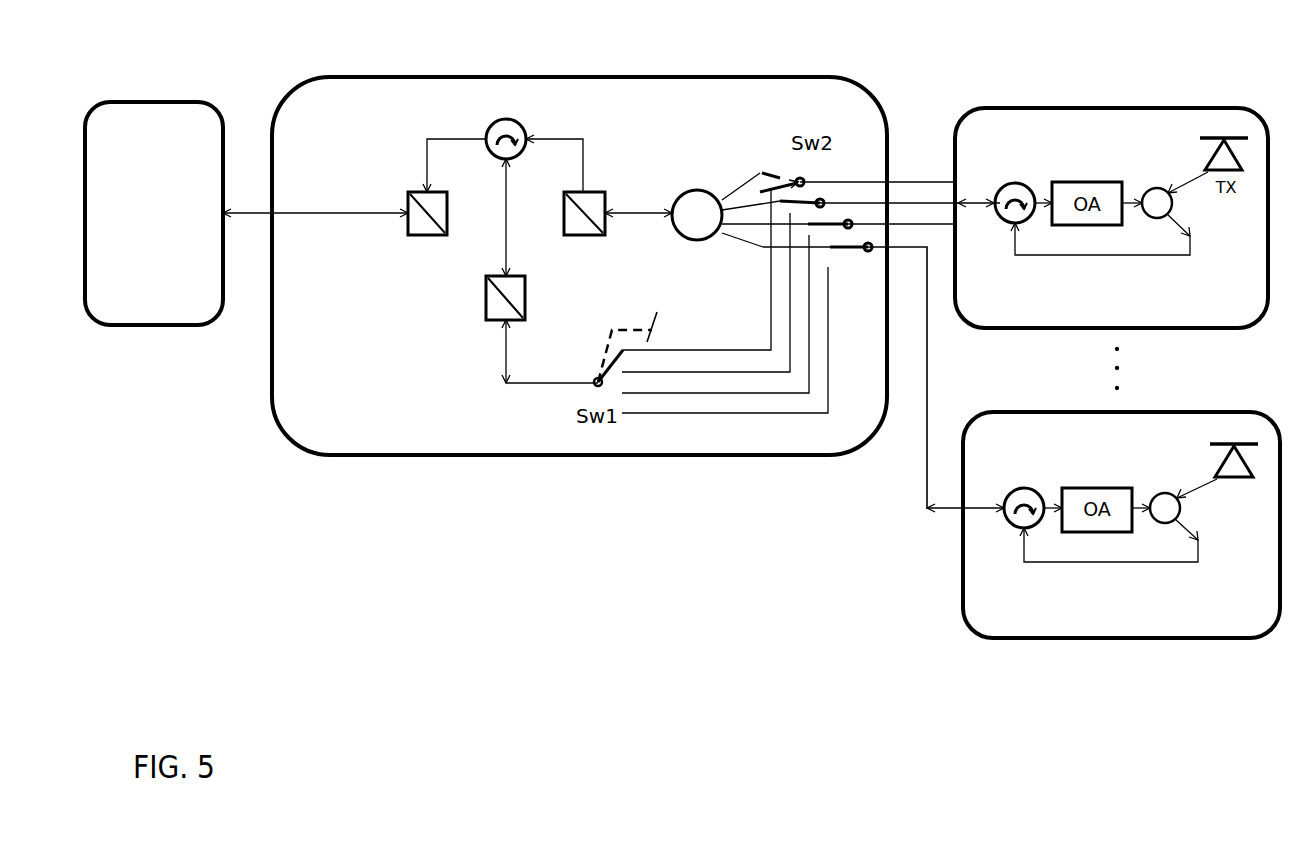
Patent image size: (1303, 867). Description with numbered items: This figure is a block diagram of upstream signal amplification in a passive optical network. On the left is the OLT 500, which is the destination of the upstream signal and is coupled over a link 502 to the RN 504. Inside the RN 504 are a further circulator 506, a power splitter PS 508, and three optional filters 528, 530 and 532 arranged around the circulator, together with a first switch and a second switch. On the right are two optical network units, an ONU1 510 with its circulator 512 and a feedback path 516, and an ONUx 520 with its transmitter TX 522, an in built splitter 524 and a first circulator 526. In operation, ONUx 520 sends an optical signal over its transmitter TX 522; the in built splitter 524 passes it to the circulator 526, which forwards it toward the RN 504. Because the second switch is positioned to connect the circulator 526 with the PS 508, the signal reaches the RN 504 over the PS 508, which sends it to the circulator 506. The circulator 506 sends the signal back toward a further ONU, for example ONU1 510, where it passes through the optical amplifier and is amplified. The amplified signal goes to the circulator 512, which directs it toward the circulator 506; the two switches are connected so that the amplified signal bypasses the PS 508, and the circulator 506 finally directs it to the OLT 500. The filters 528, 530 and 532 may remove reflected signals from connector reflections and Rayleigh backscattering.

The OLT 500 is at (138, 102).
The feeder fiber link 502 is at (240, 210).
The RN 504 is at (373, 77).
The further circulator 506 is at (522, 128).
The power splitter PS 508 is at (696, 190).
The first optical network unit (ONU1) 510 is at (1013, 108).
The circulator 512 is at (1030, 187).
The feedback loop 516 is at (1107, 255).
The ONUx 520 is at (963, 578).
The transmitter TX 522 is at (1232, 446).
The in built splitter 524 is at (1160, 492).
The first circulator 526 is at (1038, 490).
The filter 528 is at (427, 235).
The filter 530 is at (486, 313).
The filter 532 is at (595, 235).